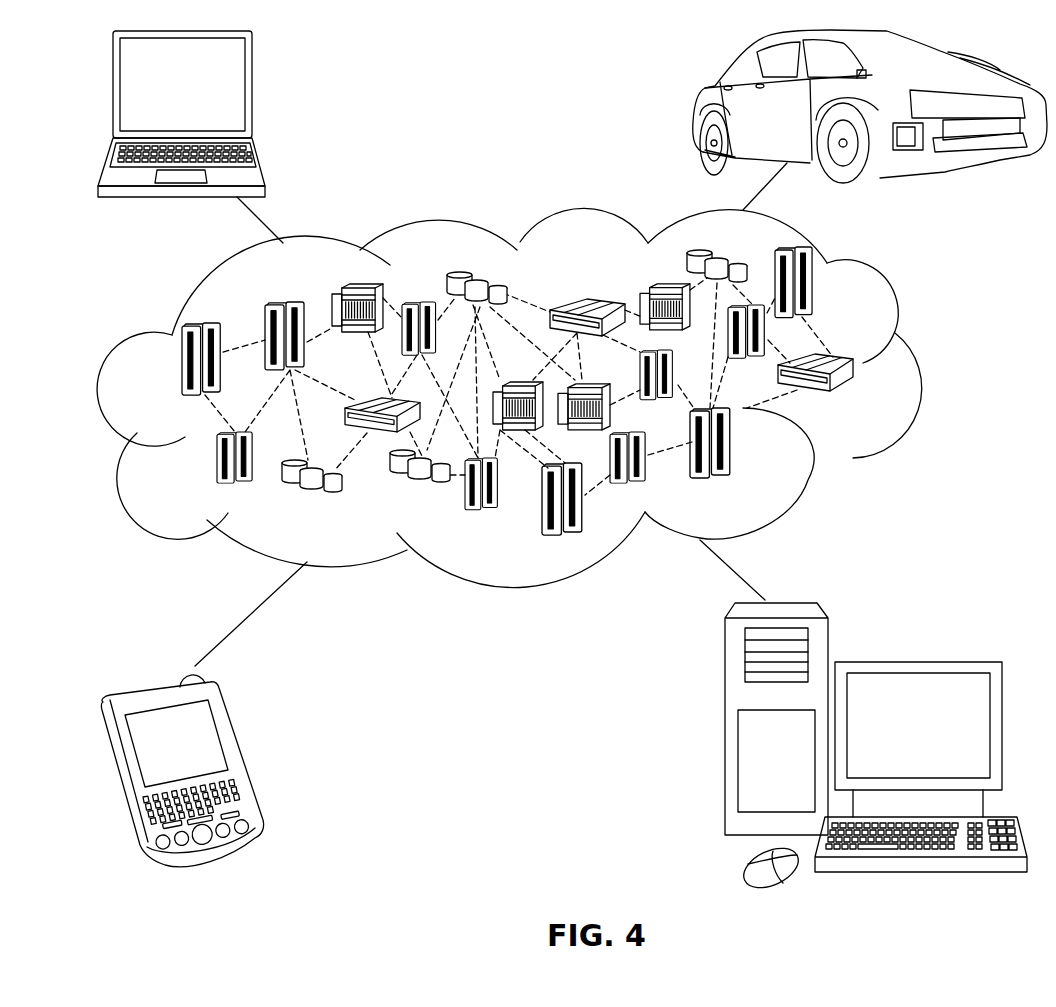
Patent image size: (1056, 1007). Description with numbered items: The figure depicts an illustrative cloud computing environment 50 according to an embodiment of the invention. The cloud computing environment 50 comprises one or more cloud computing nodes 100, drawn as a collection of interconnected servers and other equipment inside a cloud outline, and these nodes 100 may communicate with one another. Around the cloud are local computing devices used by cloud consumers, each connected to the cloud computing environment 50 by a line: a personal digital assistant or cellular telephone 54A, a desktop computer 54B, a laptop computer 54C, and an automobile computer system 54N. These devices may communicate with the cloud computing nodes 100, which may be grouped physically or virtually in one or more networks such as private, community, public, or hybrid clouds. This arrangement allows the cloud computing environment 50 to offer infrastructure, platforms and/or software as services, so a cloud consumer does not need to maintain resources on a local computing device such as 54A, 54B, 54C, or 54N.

The cloud computing environment 50 is at (917, 370).
The cloud computing nodes 100 is at (858, 400).
The personal digital assistant or cellular telephone 54A is at (243, 757).
The desktop computer 54B is at (915, 661).
The laptop computer 54C is at (251, 92).
The automobile computer system 54N is at (693, 107).